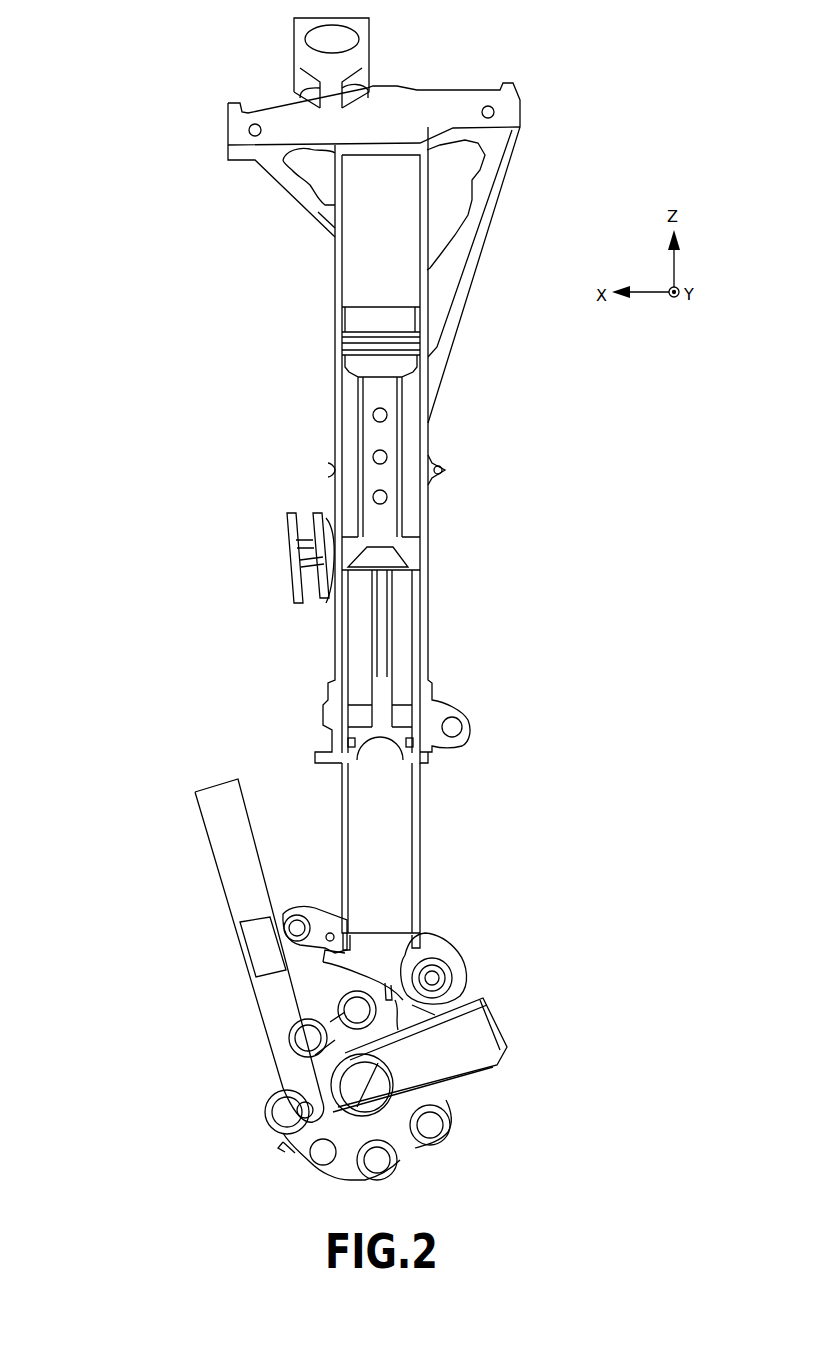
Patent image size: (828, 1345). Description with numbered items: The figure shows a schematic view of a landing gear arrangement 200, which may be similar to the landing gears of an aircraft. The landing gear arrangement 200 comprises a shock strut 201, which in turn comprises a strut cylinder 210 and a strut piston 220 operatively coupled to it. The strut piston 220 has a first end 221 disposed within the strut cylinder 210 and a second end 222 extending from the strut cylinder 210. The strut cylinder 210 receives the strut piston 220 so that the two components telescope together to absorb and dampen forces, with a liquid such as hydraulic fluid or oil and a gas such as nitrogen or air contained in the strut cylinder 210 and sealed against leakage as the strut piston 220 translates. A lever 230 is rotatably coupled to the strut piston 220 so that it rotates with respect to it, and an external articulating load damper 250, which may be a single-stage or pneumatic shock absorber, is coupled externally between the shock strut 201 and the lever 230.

The landing gear arrangement 200 is at (126, 106).
The shock strut 201 is at (335, 288).
The strut cylinder 210 is at (335, 440).
The strut piston 220 is at (417, 820).
The first end 221 is at (420, 540).
The second end 222 is at (390, 945).
The lever 230 is at (490, 1067).
The load damper 250 is at (225, 782).